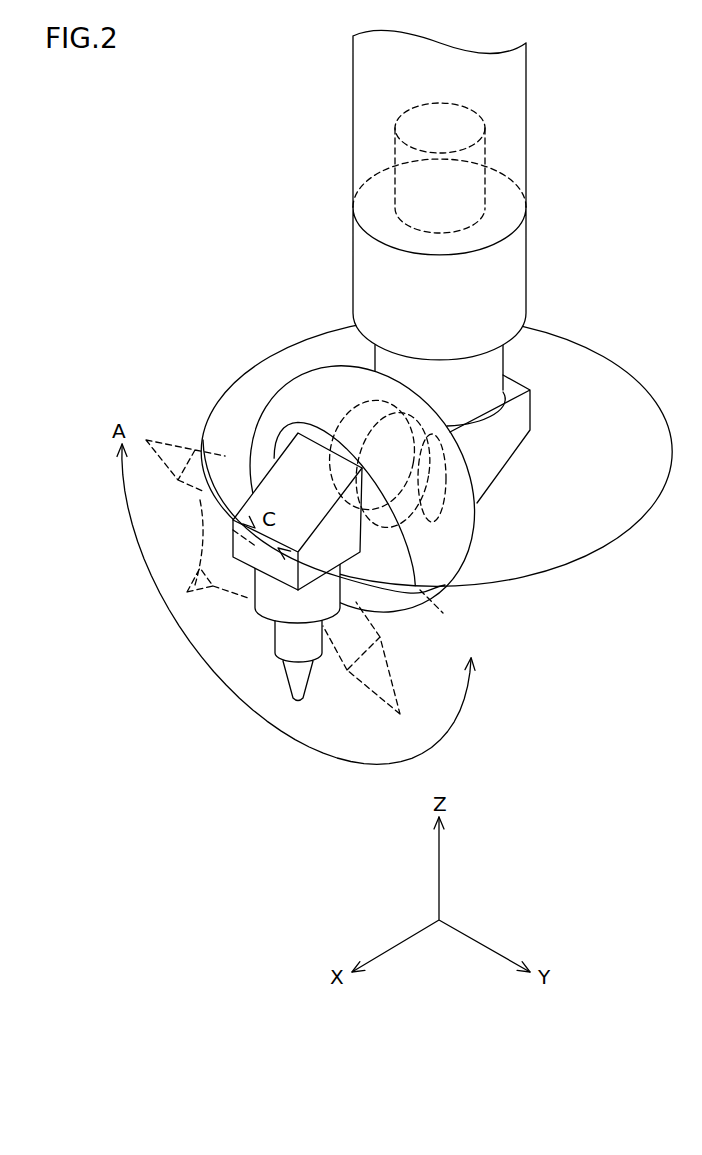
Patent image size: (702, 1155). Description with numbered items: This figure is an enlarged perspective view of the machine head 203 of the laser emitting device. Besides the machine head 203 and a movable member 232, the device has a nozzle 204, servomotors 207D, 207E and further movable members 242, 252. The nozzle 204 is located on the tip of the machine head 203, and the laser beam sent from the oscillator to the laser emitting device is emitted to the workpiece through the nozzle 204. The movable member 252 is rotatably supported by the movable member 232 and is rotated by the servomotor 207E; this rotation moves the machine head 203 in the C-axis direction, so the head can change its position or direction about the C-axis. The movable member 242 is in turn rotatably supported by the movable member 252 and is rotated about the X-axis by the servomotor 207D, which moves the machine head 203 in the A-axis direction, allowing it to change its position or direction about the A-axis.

The movable member 232 is at (352, 116).
The movable member 252 is at (528, 274).
The servomotor 207E is at (487, 153).
The movable member 242 is at (345, 385).
The servomotor 207D is at (443, 477).
The machine head 203 is at (172, 407).
The nozzle 204 is at (306, 686).